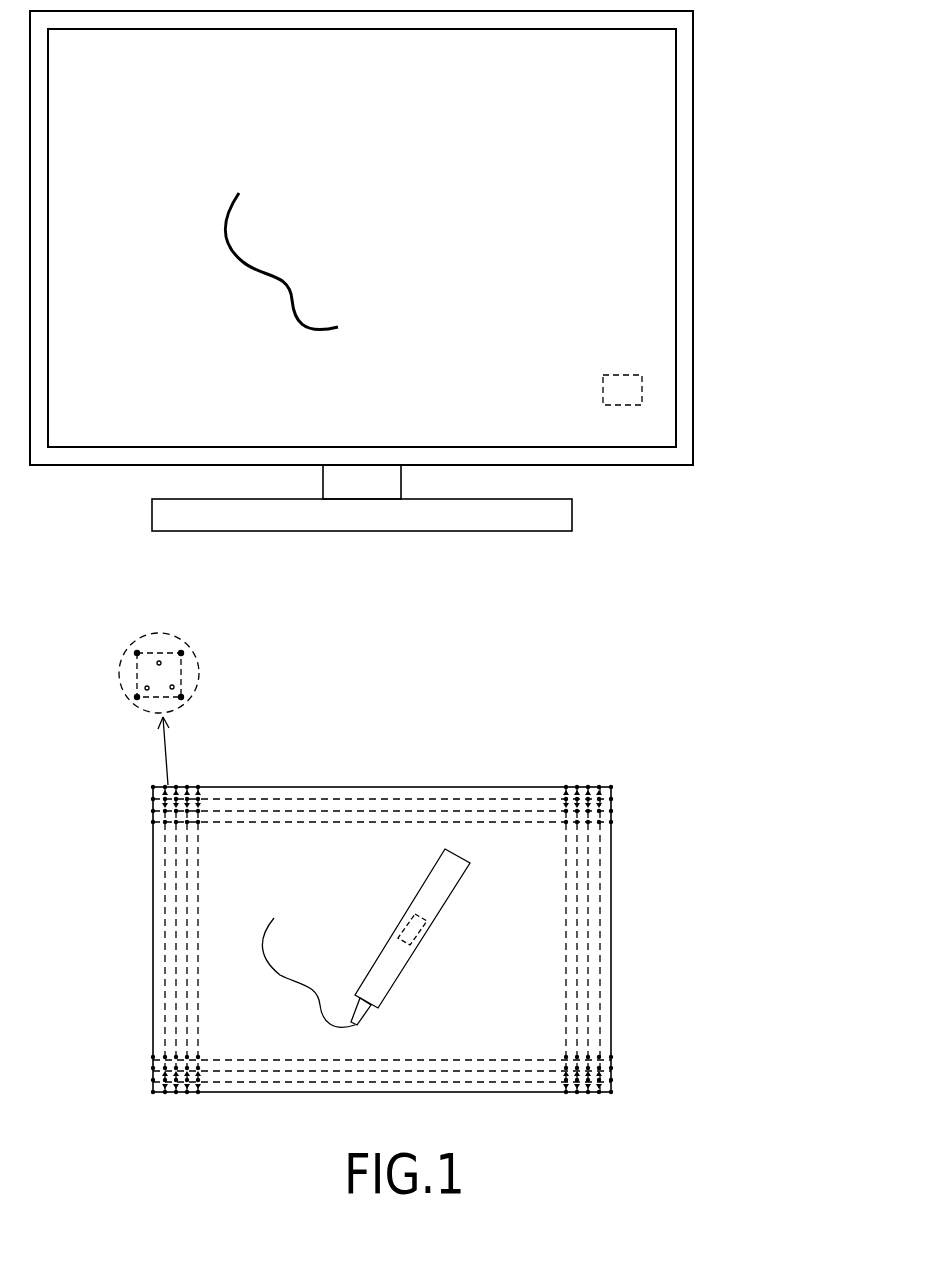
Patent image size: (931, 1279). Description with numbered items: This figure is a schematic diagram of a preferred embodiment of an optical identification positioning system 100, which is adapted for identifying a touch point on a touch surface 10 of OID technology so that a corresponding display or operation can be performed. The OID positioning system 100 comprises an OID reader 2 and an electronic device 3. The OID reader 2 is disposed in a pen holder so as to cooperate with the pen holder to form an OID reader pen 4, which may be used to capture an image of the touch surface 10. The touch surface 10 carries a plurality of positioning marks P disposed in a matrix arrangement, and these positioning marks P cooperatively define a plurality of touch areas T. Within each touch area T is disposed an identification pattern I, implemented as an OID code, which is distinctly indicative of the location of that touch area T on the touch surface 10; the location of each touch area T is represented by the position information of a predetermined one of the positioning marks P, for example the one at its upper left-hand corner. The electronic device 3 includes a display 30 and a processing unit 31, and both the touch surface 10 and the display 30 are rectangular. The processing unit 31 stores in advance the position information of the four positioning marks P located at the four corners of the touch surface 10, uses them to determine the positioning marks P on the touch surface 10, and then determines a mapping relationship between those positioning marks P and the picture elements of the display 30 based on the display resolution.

The electronic device 3 is at (700, 147).
The display 30 is at (643, 274).
The processing unit 31 is at (634, 391).
The optical identification (OID) positioning system 100 is at (681, 611).
The touch surface 10 is at (612, 940).
The OID reader pen 4 is at (398, 978).
The OID reader 2 is at (422, 932).
The positioning marks P is at (137, 653).
The touch areas T is at (196, 663).
The identification patterns I is at (176, 687).